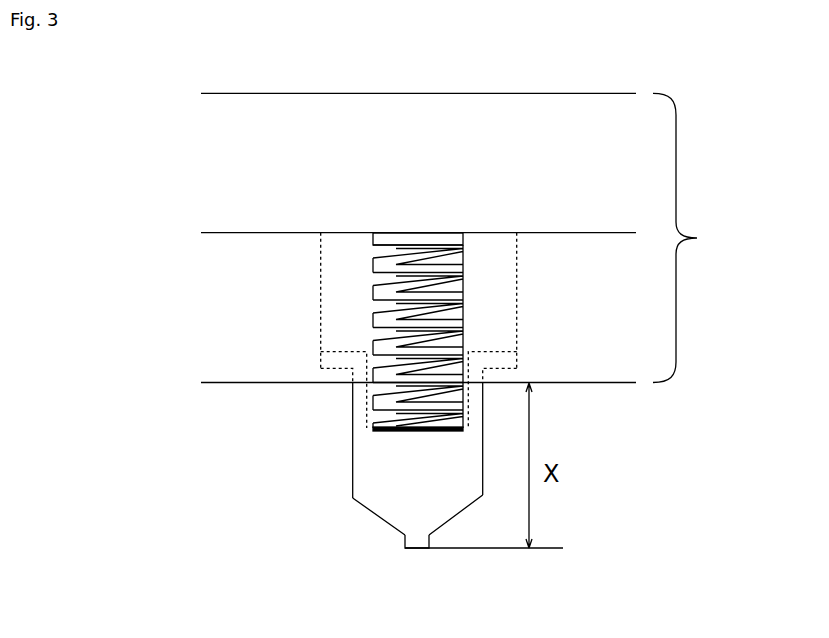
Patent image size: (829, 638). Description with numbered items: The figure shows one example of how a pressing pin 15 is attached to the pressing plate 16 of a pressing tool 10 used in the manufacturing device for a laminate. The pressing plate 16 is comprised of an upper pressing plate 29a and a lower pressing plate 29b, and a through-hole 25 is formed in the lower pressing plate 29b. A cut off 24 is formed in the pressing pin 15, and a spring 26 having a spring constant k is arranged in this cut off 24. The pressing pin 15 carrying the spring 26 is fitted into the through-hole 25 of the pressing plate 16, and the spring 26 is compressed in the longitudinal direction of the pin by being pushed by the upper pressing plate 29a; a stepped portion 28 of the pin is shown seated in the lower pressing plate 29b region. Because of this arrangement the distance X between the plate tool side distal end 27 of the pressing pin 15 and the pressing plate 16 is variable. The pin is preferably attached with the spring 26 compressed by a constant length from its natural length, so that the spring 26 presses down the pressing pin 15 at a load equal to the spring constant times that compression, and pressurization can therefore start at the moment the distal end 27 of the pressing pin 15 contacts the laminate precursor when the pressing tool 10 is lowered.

The pressing tool 10 is at (726, 53).
The pressing pin 15 is at (385, 490).
The pressing plate 16 is at (694, 237).
The cut off 24 is at (367, 427).
The through-hole 25 is at (500, 255).
The spring 26 is at (423, 242).
The plate tool side distal end 27 is at (415, 550).
The stopper step 28 is at (337, 362).
The upper pressing plate 29a is at (573, 117).
The lower pressing plate 29b is at (610, 372).